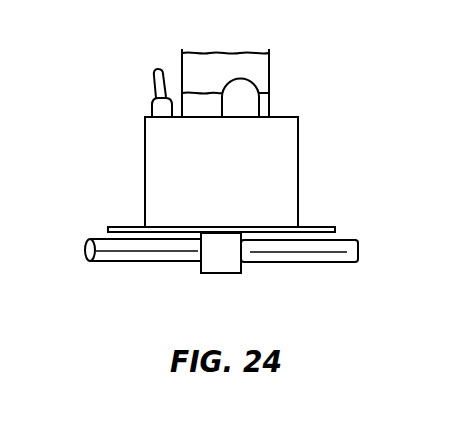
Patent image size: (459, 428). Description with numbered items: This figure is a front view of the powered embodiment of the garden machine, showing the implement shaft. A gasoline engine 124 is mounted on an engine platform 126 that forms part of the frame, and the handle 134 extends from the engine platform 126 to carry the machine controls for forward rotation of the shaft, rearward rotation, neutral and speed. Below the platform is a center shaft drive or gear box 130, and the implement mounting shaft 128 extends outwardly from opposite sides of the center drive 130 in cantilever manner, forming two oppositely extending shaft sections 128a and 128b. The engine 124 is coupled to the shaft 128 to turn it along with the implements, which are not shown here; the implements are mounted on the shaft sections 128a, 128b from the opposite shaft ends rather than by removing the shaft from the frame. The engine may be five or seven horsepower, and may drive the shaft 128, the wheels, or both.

The gasoline engine 124 is at (160, 172).
The engine platform 126 is at (310, 227).
The implement mounting shaft 128 is at (182, 255).
The shaft section 128a is at (105, 255).
The shaft section 128b is at (337, 255).
The center shaft drive or gear box 130 is at (225, 240).
The handle 134 is at (181, 68).